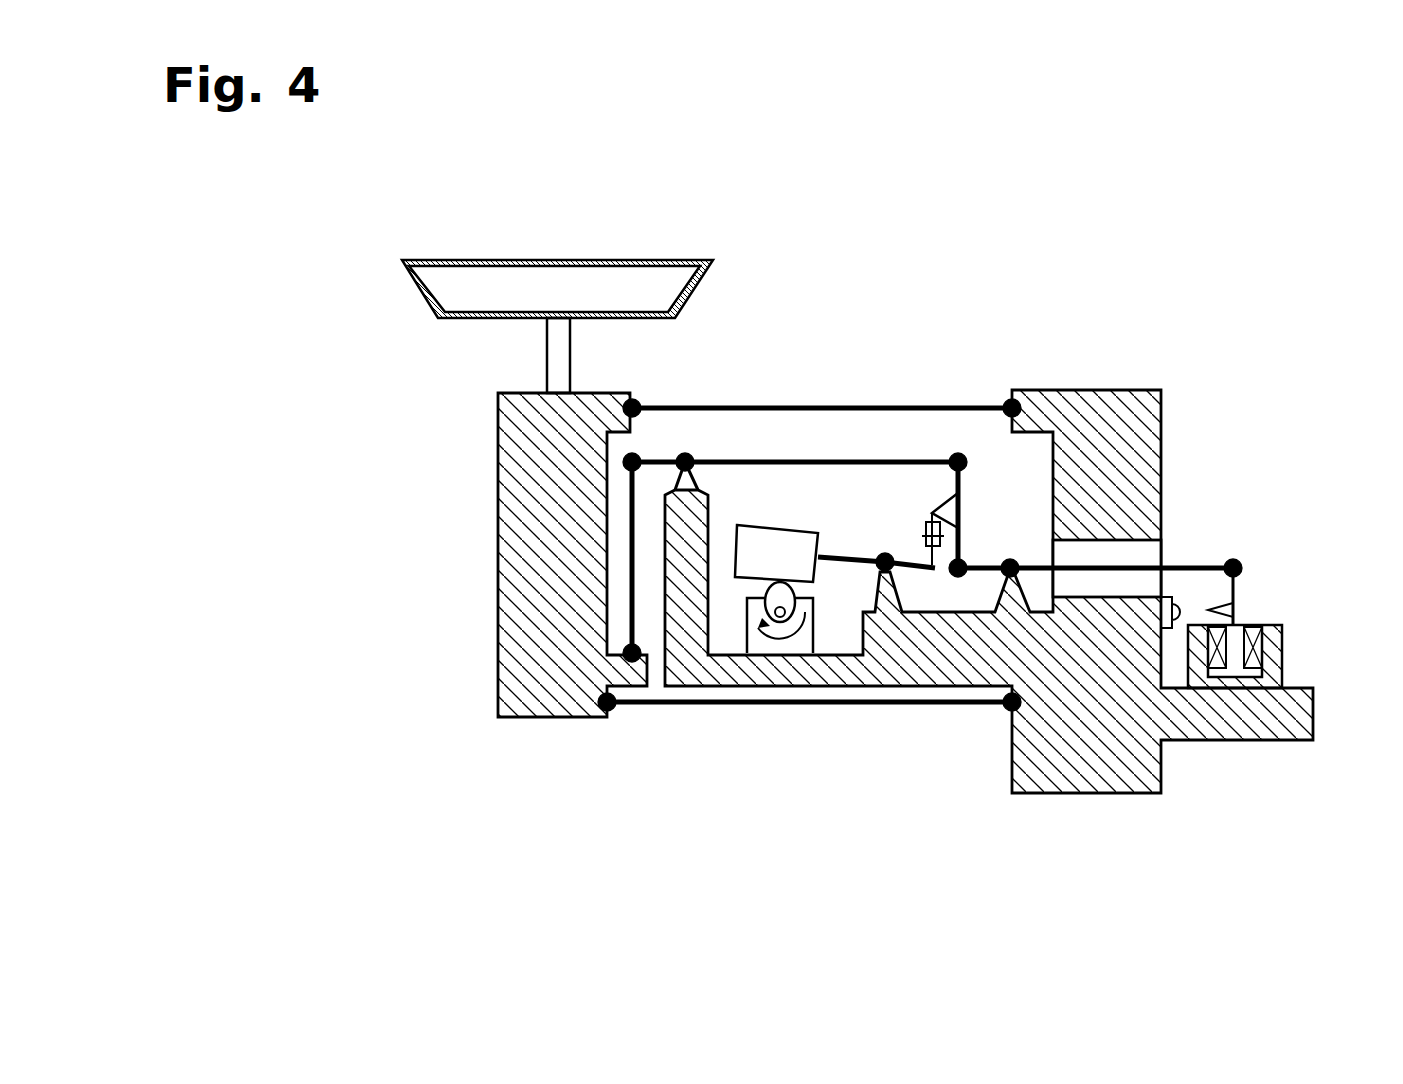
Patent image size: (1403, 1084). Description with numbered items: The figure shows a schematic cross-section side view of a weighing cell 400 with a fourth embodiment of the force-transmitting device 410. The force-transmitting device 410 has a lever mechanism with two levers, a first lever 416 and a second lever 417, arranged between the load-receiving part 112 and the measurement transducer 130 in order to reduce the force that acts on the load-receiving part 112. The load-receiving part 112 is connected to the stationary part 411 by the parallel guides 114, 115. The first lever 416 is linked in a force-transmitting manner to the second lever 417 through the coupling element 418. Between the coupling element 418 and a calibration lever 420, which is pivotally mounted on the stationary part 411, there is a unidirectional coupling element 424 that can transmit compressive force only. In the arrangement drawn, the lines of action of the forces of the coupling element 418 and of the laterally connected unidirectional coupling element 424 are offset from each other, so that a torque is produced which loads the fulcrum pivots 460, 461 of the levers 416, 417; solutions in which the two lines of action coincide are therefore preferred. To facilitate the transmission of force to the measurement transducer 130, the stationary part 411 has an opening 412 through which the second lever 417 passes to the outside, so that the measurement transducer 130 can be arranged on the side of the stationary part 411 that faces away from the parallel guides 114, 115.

The weighing cell 400 is at (1240, 300).
The force-transmitting device 410 is at (912, 438).
The stationary part 411 is at (1103, 753).
The opening 412 is at (1145, 558).
The load-receiving part 112 is at (522, 470).
The parallel guide 114 is at (863, 408).
The parallel guide 115 is at (737, 705).
The first lever 416 is at (793, 462).
The second lever 417 is at (1037, 570).
The coupling element 418 is at (958, 515).
The unidirectional coupling element 424 is at (935, 533).
The fulcrum pivot 460 is at (686, 455).
The fulcrum pivot 461 is at (1007, 577).
The calibration lever 420 is at (853, 565).
The measurement transducer 130 is at (1280, 657).